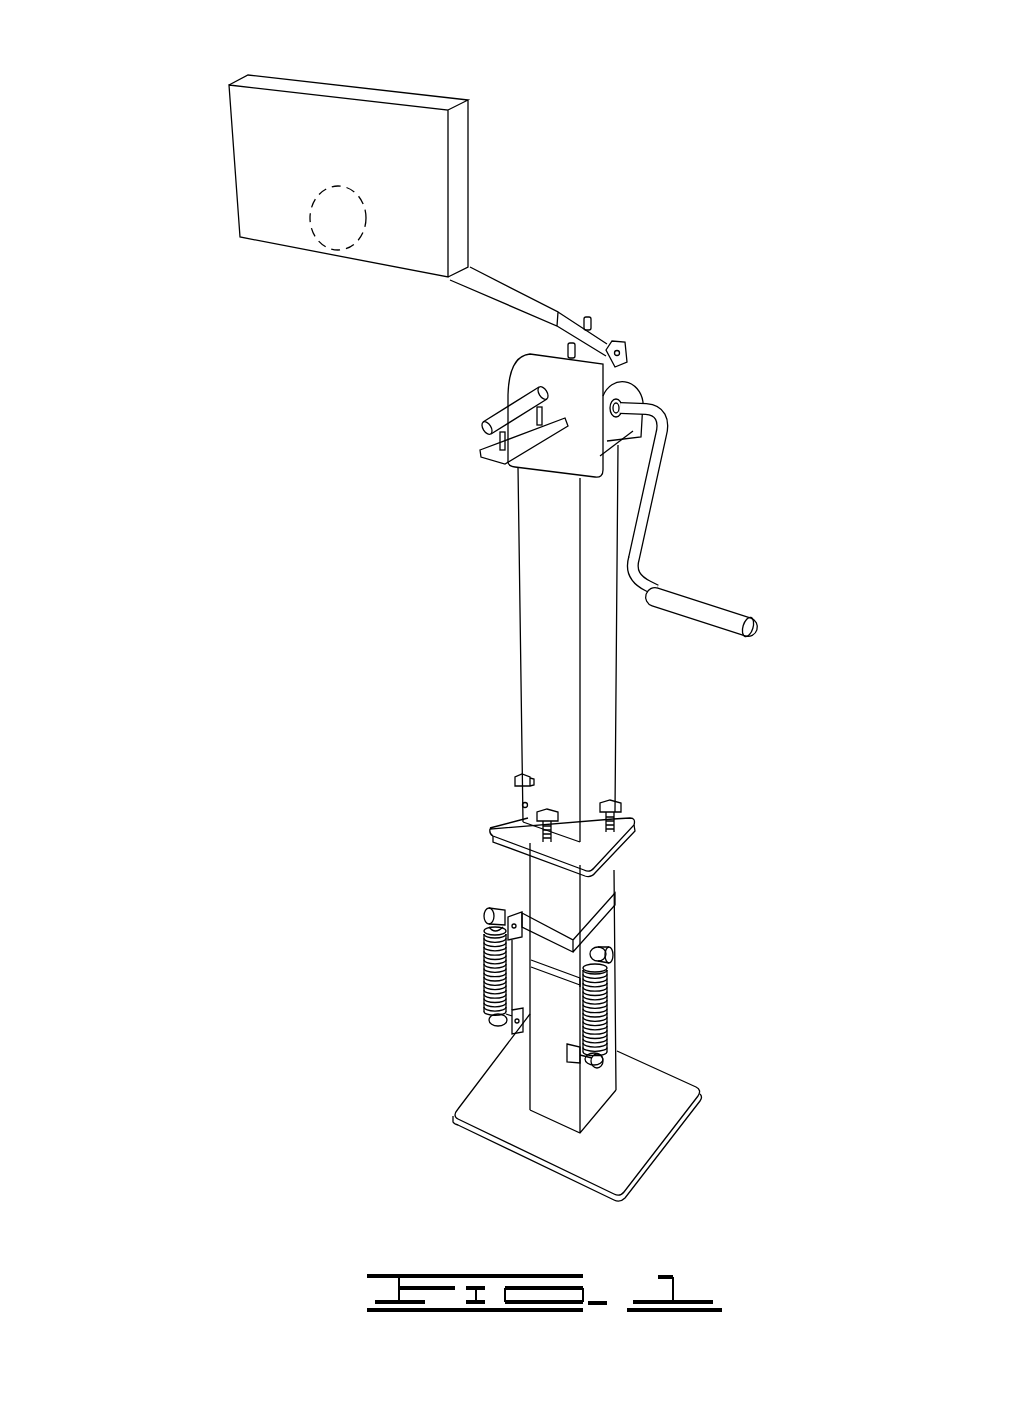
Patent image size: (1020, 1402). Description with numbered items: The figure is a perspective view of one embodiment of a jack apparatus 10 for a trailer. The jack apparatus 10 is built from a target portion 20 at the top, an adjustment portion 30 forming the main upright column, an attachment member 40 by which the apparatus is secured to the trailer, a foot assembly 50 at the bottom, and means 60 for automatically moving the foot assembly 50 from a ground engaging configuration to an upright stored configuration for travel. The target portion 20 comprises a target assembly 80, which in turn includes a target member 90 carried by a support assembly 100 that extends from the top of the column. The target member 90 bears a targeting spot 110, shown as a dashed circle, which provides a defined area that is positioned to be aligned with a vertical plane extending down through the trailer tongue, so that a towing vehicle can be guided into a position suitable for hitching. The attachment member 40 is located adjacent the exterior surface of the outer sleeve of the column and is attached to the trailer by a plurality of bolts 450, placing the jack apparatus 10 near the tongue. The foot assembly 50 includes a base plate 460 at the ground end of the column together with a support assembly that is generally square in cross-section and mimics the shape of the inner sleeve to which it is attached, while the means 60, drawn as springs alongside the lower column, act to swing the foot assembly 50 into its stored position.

The jack apparatus 10 is at (575, 145).
The target portion 20 is at (283, 72).
The adjustment portion 30 is at (612, 677).
The attachment member 40 is at (620, 812).
The foot assembly 50 is at (660, 1085).
The means for automatically moving the foot assembly 60 is at (487, 990).
The target assembly 80 is at (417, 78).
The target member 90 is at (255, 132).
The support assembly 100 is at (525, 290).
The targeting spot 110 is at (347, 248).
The bolts 450 is at (520, 776).
The base plate 460 is at (598, 851).